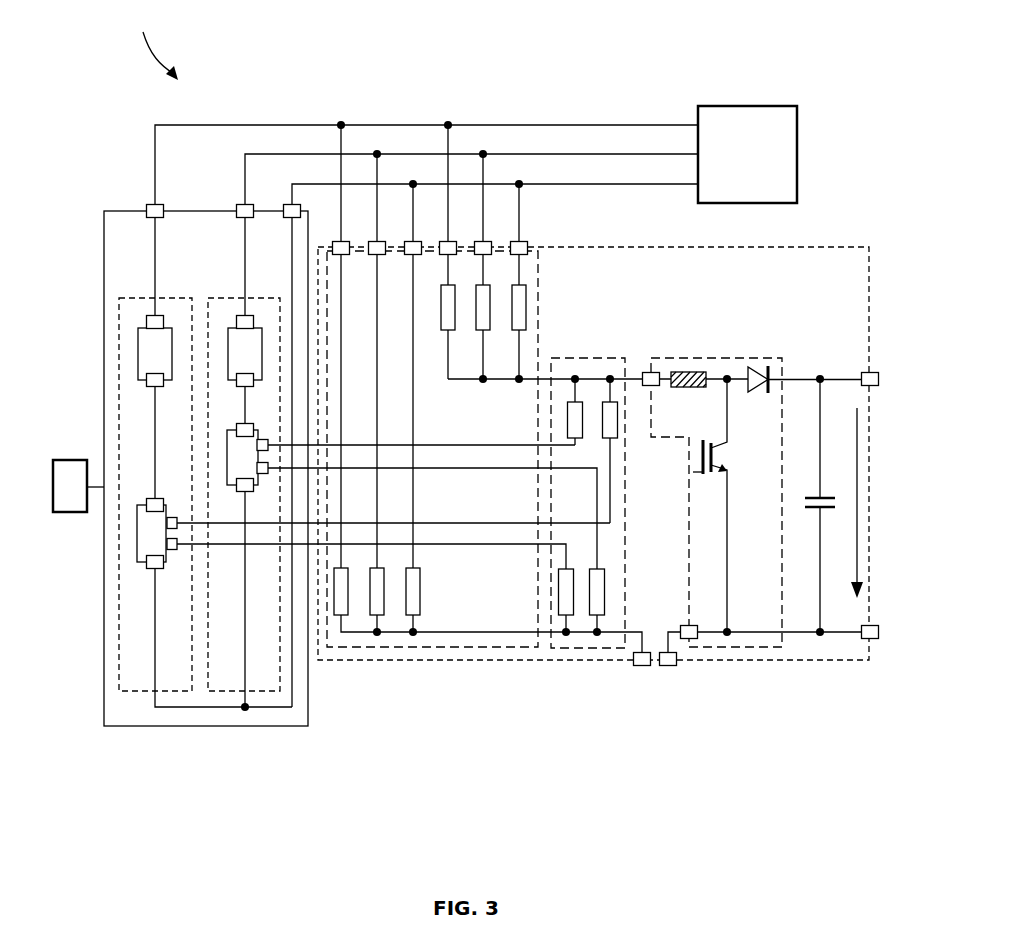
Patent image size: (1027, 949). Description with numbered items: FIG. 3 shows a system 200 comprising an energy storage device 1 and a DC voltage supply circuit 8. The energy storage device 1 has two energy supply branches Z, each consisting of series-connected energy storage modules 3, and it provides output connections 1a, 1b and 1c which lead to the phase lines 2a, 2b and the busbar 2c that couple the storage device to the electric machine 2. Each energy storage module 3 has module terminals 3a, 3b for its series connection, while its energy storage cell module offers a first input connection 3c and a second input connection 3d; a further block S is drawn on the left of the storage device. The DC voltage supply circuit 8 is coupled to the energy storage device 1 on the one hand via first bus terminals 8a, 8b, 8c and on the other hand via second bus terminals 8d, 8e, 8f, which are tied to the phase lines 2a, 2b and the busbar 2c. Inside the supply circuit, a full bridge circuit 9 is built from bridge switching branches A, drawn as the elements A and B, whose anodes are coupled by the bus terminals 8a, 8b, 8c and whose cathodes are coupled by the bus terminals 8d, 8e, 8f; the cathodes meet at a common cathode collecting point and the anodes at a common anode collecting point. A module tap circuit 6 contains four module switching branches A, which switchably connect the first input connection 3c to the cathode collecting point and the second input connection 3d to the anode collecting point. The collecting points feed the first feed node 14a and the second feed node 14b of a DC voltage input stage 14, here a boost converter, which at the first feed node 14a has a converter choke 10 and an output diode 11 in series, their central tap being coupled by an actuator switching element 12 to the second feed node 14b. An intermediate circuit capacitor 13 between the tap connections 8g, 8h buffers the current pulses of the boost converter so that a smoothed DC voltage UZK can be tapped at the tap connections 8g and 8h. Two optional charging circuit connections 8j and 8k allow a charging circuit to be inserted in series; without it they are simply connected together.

The system 200 is at (148, 43).
The energy storage device 1 is at (124, 211).
The output connection 1a is at (157, 204).
The output connection 1b is at (243, 204).
The output connection 1c is at (292, 218).
The electric machine 2 is at (797, 131).
The phase line 2a is at (262, 125).
The phase line 2b is at (307, 154).
The busbar 2c is at (580, 184).
The energy storage module 3 is at (138, 352).
The module terminal 3a is at (158, 316).
The module terminal 3b is at (158, 387).
The first input connection 3c is at (172, 517).
The second input connection 3d is at (176, 550).
The sensor S is at (70, 460).
The energy supply branch Z is at (168, 691).
The module tap circuit 6 is at (598, 648).
The DC voltage supply circuit 8 is at (838, 247).
The first bus terminal 8a is at (445, 241).
The first bus terminal 8b is at (480, 241).
The first bus terminal 8c is at (516, 241).
The second bus terminal 8d is at (338, 241).
The second bus terminal 8e is at (374, 241).
The second bus terminal 8f is at (410, 241).
The tap connection 8g is at (870, 372).
The tap connection 8h is at (870, 640).
The charging circuit connection 8j is at (642, 666).
The charging circuit connection 8k is at (668, 666).
The full bridge circuit 9 is at (455, 647).
The converter choke 10 is at (690, 372).
The output diode 11 is at (755, 367).
The actuator switching element 12 is at (728, 453).
The intermediate circuit capacitor 13 is at (816, 510).
The DC voltage input stage 14 is at (765, 647).
The first feed node 14a is at (648, 372).
The second feed node 14b is at (693, 640).
The switching branch A is at (341, 634).
The resistor of type B is at (447, 380).
The DC voltage UZK is at (857, 408).